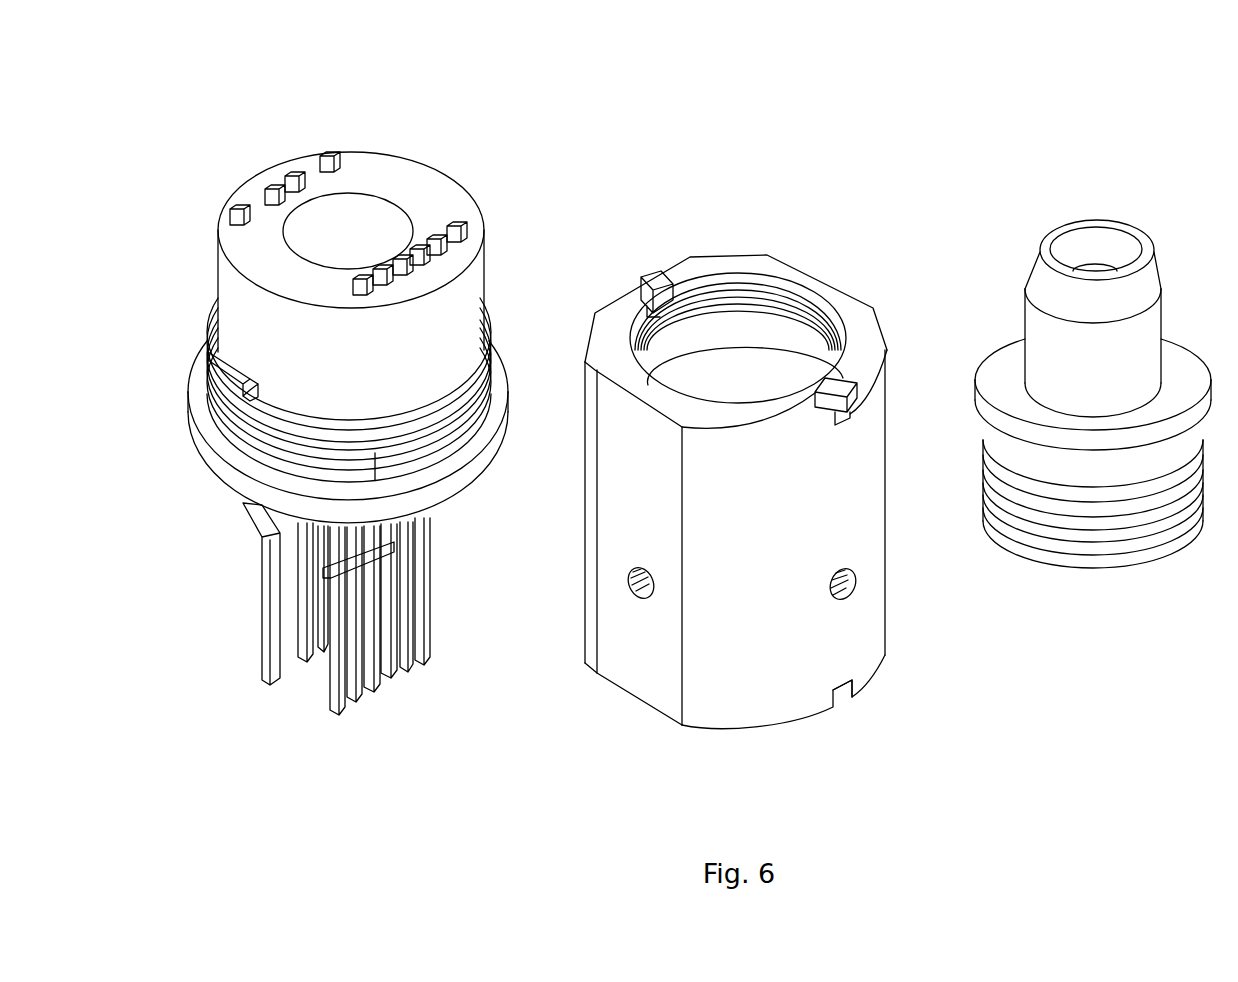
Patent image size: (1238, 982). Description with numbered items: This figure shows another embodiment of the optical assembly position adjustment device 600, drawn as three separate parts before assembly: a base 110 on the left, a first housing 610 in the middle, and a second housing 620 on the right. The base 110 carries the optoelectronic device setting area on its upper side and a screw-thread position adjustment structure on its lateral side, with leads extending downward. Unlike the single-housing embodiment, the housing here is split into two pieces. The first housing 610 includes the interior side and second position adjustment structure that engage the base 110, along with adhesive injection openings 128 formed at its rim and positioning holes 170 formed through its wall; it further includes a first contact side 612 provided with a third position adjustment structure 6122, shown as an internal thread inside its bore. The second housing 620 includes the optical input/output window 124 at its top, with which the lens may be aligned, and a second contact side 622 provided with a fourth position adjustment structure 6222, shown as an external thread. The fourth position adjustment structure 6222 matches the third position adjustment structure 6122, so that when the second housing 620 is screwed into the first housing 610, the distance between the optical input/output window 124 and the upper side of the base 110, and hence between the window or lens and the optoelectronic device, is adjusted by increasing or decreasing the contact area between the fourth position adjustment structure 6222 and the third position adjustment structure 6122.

The optical assembly position adjustment device 600 is at (141, 806).
The base 110 is at (510, 118).
The first housing 610 is at (899, 118).
The second housing 620 is at (966, 122).
The first contact side 612 is at (773, 340).
The third position adjustment structure 6122 is at (713, 297).
The adhesive injection opening 128 is at (633, 284).
The positioning hole 170 is at (628, 582).
The optical input/output window 124 is at (1096, 238).
The second contact side 622 is at (1046, 483).
The fourth position adjustment structure 6222 is at (1142, 537).